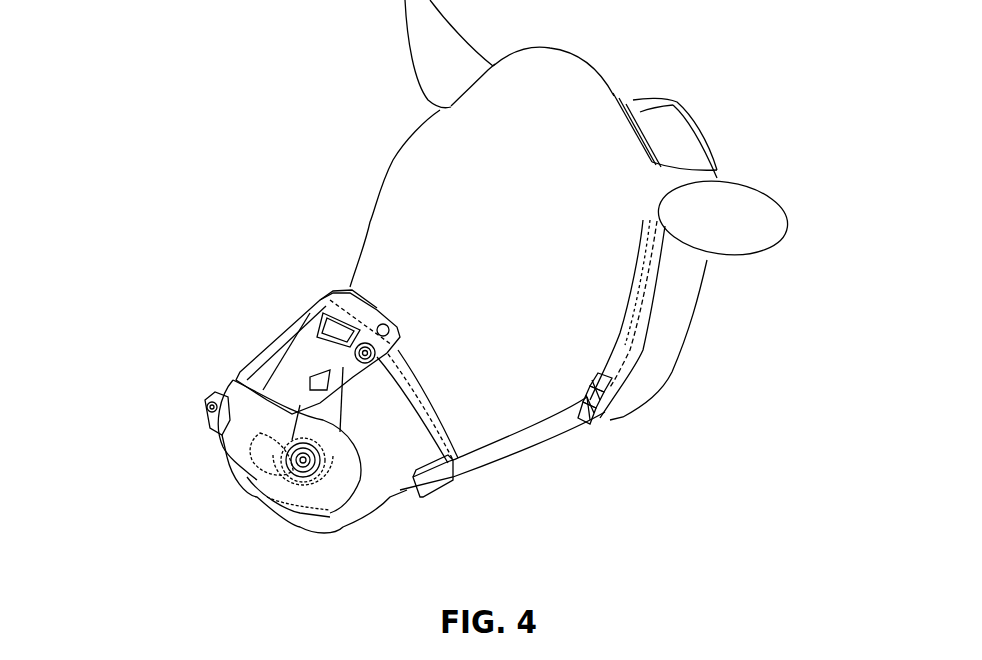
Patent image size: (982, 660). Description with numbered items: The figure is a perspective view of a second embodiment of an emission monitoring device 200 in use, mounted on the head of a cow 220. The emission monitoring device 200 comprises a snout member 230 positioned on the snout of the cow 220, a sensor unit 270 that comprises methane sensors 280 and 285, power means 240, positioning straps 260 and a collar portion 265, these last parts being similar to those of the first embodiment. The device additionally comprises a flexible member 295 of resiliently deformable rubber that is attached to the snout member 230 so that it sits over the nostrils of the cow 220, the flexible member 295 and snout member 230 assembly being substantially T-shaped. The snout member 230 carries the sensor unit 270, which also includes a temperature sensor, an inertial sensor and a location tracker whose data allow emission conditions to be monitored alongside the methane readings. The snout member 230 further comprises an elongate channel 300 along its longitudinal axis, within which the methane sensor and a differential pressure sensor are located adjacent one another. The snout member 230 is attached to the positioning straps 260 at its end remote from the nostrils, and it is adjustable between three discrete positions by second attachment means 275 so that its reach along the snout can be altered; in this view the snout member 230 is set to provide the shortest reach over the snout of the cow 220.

The emission monitoring device 200 is at (462, 307).
The cow 220 is at (543, 60).
The power means 240 is at (689, 337).
The collar portion 265 is at (623, 357).
The positioning straps 260 is at (533, 440).
The sensor unit 270 is at (236, 420).
The snout member 230 is at (244, 320).
The elongate channel 300 is at (283, 370).
The second attachment means 275 is at (330, 293).
The methane sensor 285 is at (230, 390).
The flexible member 295 is at (222, 452).
The methane sensor 280 is at (305, 465).